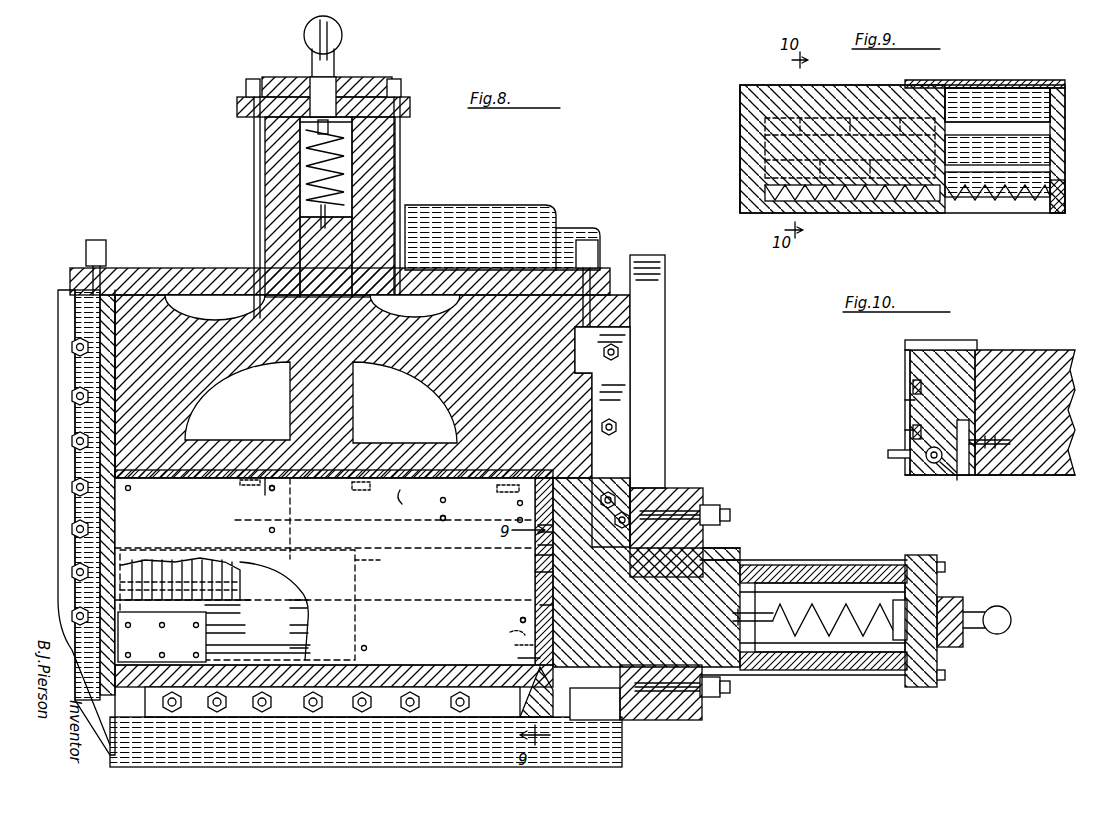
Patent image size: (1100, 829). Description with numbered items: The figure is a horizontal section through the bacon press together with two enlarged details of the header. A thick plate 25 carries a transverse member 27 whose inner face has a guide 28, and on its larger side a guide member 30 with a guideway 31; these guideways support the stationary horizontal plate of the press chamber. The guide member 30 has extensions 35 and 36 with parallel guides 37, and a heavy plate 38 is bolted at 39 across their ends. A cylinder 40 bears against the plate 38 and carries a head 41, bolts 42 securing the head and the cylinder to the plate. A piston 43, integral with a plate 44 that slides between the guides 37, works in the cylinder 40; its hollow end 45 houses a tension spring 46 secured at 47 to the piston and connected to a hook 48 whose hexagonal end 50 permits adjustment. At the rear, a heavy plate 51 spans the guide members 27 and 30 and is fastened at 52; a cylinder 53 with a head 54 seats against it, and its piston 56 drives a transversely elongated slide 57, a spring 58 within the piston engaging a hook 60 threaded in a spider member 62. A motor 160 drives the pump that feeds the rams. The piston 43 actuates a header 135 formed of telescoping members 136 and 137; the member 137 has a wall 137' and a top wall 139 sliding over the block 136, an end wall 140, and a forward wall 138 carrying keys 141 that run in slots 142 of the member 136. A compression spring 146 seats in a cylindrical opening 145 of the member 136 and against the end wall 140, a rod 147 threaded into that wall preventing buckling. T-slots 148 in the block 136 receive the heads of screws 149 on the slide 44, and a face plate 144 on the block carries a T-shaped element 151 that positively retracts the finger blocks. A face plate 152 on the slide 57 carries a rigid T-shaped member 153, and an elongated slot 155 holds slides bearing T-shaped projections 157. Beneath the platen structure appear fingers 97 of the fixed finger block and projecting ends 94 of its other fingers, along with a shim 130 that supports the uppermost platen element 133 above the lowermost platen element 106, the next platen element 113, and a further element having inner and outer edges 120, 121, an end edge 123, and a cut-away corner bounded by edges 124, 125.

In FIG. 8, the head 54 is at (368, 82).
In FIG. 8, the piston 56 is at (372, 205).
In FIG. 8, the cylinder 53 is at (262, 187).
In FIG. 8, the spring 58 is at (346, 168).
In FIG. 8, the hook 60 is at (317, 130).
In FIG. 8, the spider member 62 is at (303, 125).
In FIG. 8, the motor 160 is at (553, 212).
In FIG. 8, the heavy plate 51 is at (180, 275).
In FIG. 8, the fastenings 52 is at (97, 240).
In FIG. 8, the slide 57 is at (232, 300).
In FIG. 8, the plate 25 is at (60, 392).
In FIG. 8, the member 27 is at (100, 362).
In FIG. 8, the guide 28 is at (72, 346).
In FIG. 8, the guide member 30 is at (655, 396).
In FIG. 8, the guideway 31 is at (578, 442).
In FIG. 8, the plate 44 is at (545, 578).
In FIG. 10, the plate 44 is at (1050, 350).
In FIG. 8, the extension 35 is at (651, 532).
In FIG. 8, the bolts 39 is at (715, 508).
In FIG. 8, the heavy plate 38 is at (704, 550).
In FIG. 8, the T-shaped member 153 is at (219, 492).
In FIG. 8, the platen element 106 is at (230, 499).
In FIG. 8, the face plate 152 is at (265, 492).
In FIG. 8, the elongated slot 155 is at (341, 496).
In FIG. 8, the T-shaped projection 157 is at (375, 498).
In FIG. 8, the outer edge 121 is at (412, 498).
In FIG. 8, the longitudinal edge 124 is at (316, 548).
In FIG. 8, the end edge 123 is at (422, 534).
In FIG. 8, the transverse edge 125 is at (376, 569).
In FIG. 8, the uppermost platen element 133 is at (292, 564).
In FIG. 8, the inner edge 120 is at (425, 600).
In FIG. 8, the platen element 113 is at (401, 633).
In FIG. 8, the fingers 97 is at (170, 563).
In FIG. 8, the projecting ends 94 is at (243, 613).
In FIG. 8, the shim 130 is at (162, 637).
In FIG. 8, the rod 147 is at (538, 528).
In FIG. 9, the rod 147 is at (1058, 215).
In FIG. 10, the rod 147 is at (926, 458).
In FIG. 8, the compression spring 146 is at (538, 546).
In FIG. 9, the compression spring 146 is at (980, 208).
In FIG. 10, the compression spring 146 is at (948, 470).
In FIG. 8, the member 137 is at (515, 562).
In FIG. 9, the member 137 is at (1042, 130).
In FIG. 9, the wall 137' is at (997, 85).
In FIG. 10, the wall 137' is at (879, 412).
In FIG. 8, the header 135 is at (528, 581).
In FIG. 9, the header 135 is at (738, 109).
In FIG. 10, the header 135 is at (967, 337).
In FIG. 8, the block 136 is at (540, 606).
In FIG. 9, the block 136 is at (761, 74).
In FIG. 10, the block 136 is at (934, 484).
In FIG. 8, the face plate 144 is at (508, 619).
In FIG. 8, the T-shaped element 151 is at (510, 632).
In FIG. 8, the T-slots 148 is at (532, 643).
In FIG. 10, the T-slots 148 is at (970, 468).
In FIG. 8, the screws 149 is at (535, 657).
In FIG. 10, the screws 149 is at (1010, 442).
In FIG. 8, the parallel guides 37 is at (595, 704).
In FIG. 8, the extension 36 is at (652, 722).
In FIG. 8, the cylinder 40 is at (815, 580).
In FIG. 8, the piston 43 is at (848, 590).
In FIG. 8, the tension spring 46 is at (780, 600).
In FIG. 8, the hollow 45 is at (842, 645).
In FIG. 8, the bolts 42 is at (822, 673).
In FIG. 8, the spring anchorage 47 is at (768, 630).
In FIG. 8, the head 41 is at (930, 566).
In FIG. 8, the hook 48 is at (925, 645).
In FIG. 8, the hexagonal end 50 is at (975, 612).
In FIG. 9, the slots 142 is at (855, 82).
In FIG. 10, the slots 142 is at (913, 372).
In FIG. 9, the top wall 139 is at (950, 80).
In FIG. 10, the top wall 139 is at (948, 338).
In FIG. 9, the end wall 140 is at (1050, 100).
In FIG. 9, the keys 141 is at (1030, 135).
In FIG. 10, the keys 141 is at (912, 440).
In FIG. 9, the cylindrical opening 145 is at (835, 218).
In FIG. 10, the cylindrical opening 145 is at (915, 475).
In FIG. 10, the forward wall 138 is at (905, 404).